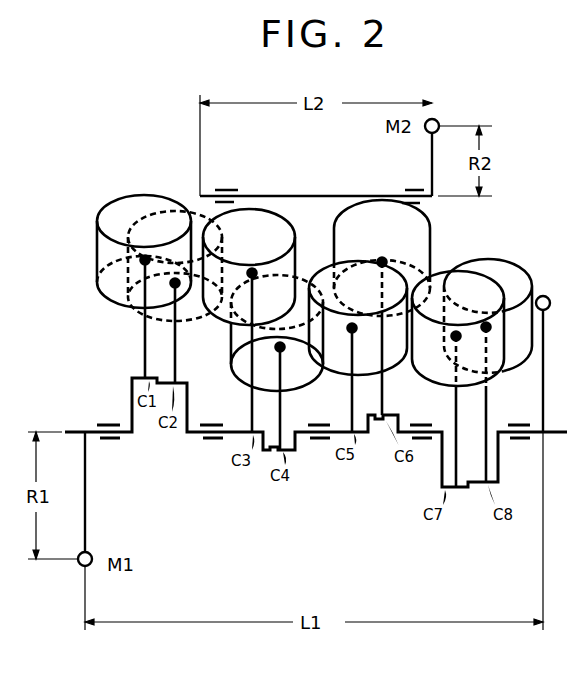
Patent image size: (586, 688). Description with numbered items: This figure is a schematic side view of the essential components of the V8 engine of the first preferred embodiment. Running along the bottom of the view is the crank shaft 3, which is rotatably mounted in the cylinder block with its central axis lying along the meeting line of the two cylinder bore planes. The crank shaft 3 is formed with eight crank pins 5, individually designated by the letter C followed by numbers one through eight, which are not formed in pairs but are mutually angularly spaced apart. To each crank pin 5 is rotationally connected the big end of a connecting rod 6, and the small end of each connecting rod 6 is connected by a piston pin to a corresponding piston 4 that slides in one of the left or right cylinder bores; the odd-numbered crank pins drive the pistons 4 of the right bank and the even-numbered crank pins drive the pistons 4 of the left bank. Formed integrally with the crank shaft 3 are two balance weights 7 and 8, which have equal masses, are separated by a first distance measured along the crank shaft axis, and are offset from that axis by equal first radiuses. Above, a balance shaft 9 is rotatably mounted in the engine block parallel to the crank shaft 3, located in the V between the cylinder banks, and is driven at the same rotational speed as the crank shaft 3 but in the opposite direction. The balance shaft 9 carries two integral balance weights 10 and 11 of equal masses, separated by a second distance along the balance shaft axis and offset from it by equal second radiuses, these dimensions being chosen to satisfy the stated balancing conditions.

The crank shaft 3 is at (91, 431).
The piston 4 is at (141, 203).
The crank pin 5 is at (161, 378).
The connecting rod 6 is at (138, 341).
The balance weight 7 is at (79, 554).
The balance weight 8 is at (548, 297).
The balance shaft 9 is at (314, 196).
The balance weight 10 is at (231, 266).
The balance weight 11 is at (438, 121).